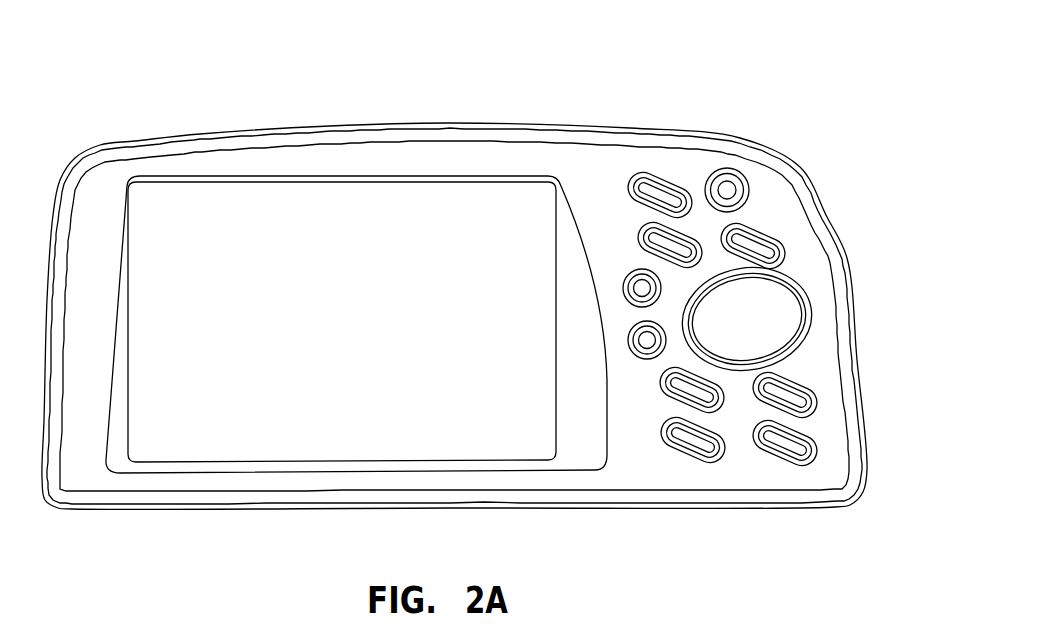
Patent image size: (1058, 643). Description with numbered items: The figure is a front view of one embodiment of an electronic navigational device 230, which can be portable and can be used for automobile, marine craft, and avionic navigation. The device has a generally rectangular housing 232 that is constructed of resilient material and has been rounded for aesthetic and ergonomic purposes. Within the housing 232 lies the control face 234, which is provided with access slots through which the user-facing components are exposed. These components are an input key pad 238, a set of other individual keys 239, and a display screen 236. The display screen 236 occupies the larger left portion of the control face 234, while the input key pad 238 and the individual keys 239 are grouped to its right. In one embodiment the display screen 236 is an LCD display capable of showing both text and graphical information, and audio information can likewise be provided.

The electronic navigational device 230 is at (662, 80).
The housing 232 is at (290, 127).
The control face 234 is at (416, 157).
The display screen 236 is at (220, 447).
The input key pad 238 is at (782, 325).
The individual keys 239 is at (757, 247).